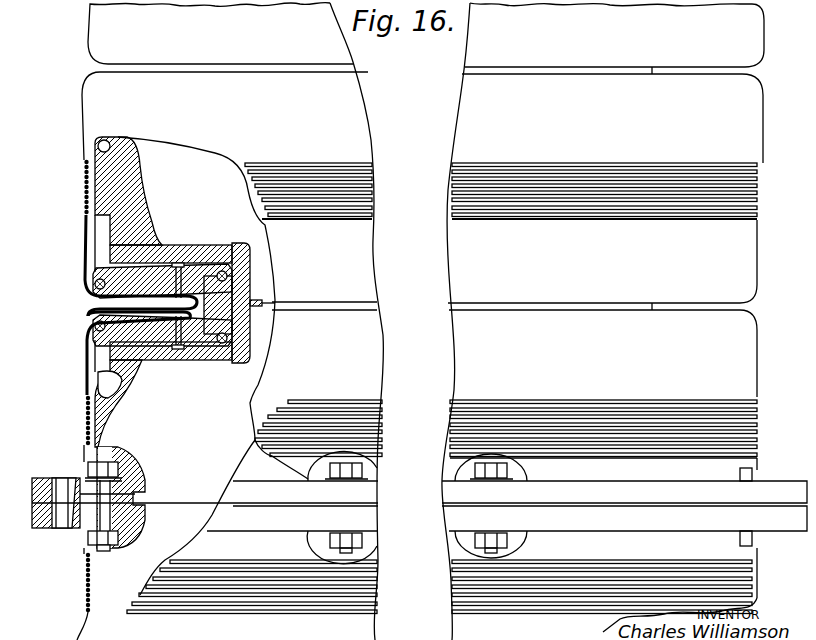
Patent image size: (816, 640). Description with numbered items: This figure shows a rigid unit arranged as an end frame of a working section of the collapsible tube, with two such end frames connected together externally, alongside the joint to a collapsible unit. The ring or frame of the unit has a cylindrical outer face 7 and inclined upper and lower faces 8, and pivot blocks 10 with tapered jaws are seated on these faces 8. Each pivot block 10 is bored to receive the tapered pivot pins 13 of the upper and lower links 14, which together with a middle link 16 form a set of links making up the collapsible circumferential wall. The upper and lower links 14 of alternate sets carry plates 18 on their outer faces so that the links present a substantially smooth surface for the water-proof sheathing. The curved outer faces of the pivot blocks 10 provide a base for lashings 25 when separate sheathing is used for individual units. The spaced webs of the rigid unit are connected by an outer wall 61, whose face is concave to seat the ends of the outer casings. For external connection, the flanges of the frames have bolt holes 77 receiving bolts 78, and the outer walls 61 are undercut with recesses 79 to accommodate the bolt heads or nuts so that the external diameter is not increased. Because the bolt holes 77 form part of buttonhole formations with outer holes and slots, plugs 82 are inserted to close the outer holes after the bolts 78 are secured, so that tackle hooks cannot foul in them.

The cylindrical outer face 7 is at (100, 354).
The inclined upper and lower faces 8 is at (128, 348).
The pivot block 10 is at (97, 252).
The pivot pin 13 is at (96, 287).
The upper and lower links 14 is at (183, 270).
The middle link 16 is at (255, 290).
The plate 18 is at (102, 507).
The lashing 25 is at (84, 188).
The outer wall 61 is at (118, 400).
The bolt hole 77 is at (110, 493).
The bolt 78 is at (352, 549).
The recess 79 is at (120, 462).
The plug 82 is at (60, 492).